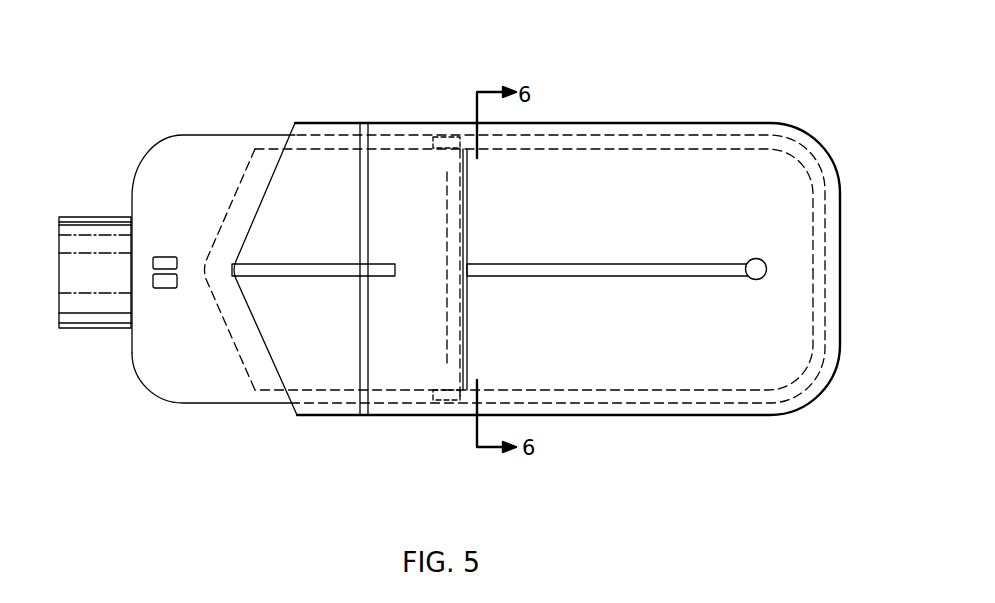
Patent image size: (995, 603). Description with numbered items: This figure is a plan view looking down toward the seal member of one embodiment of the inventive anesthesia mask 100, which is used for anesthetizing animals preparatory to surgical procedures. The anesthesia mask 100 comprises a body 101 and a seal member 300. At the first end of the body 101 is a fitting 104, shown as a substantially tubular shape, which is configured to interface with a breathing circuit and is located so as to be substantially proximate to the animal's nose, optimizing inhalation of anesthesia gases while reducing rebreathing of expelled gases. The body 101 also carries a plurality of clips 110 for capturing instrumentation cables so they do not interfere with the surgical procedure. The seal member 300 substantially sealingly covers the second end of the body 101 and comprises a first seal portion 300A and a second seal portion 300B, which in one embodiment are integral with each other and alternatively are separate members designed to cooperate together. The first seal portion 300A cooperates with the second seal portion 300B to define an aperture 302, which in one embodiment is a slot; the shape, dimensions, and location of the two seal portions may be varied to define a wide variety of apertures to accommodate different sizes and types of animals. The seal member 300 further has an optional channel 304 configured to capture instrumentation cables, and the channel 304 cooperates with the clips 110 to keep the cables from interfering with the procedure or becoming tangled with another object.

The anesthesia mask 100 is at (188, 116).
The body 101 is at (253, 404).
The fitting 104 is at (83, 220).
The clips 110 is at (162, 257).
The seal member 300 is at (547, 235).
The first seal portion 300A is at (663, 172).
The second seal portion 300B is at (713, 308).
The aperture 302 is at (692, 267).
The channel 304 is at (288, 273).